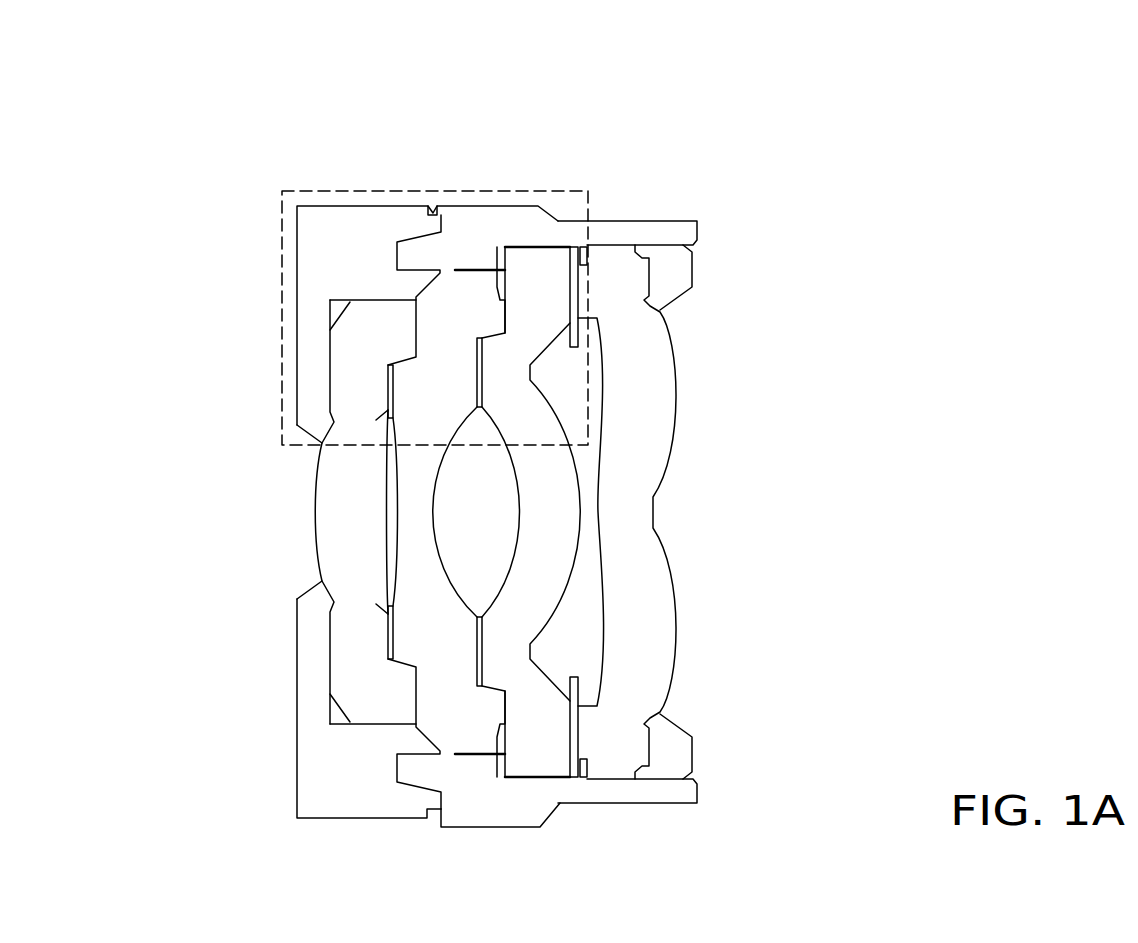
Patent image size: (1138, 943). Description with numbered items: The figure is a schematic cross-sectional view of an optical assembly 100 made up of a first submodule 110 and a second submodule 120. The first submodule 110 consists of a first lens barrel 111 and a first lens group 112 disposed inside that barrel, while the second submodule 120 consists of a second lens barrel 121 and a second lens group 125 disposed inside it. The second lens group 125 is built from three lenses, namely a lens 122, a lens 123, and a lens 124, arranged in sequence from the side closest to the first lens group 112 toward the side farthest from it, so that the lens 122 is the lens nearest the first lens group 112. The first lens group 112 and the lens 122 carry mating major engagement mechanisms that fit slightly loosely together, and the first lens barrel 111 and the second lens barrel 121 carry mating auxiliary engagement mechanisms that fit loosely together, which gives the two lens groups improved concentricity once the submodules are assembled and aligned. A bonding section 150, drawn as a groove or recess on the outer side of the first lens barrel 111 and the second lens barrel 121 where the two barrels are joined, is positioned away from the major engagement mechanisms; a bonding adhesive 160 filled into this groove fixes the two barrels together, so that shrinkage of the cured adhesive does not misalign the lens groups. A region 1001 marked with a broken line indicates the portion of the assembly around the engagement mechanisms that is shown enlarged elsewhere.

The optical assembly 100 is at (128, 833).
The first submodule 110 is at (193, 268).
The first lens barrel 111 is at (318, 247).
The first lens group 112 is at (328, 470).
The second submodule 120 is at (645, 63).
The second lens barrel 121 is at (652, 235).
The lens 122 is at (470, 280).
The lens 123 is at (540, 265).
The lens 124 is at (611, 263).
The second lens group 125 is at (612, 118).
The bonding section 150 is at (430, 206).
The bonding adhesive 160 is at (432, 820).
The region 1001 is at (340, 191).